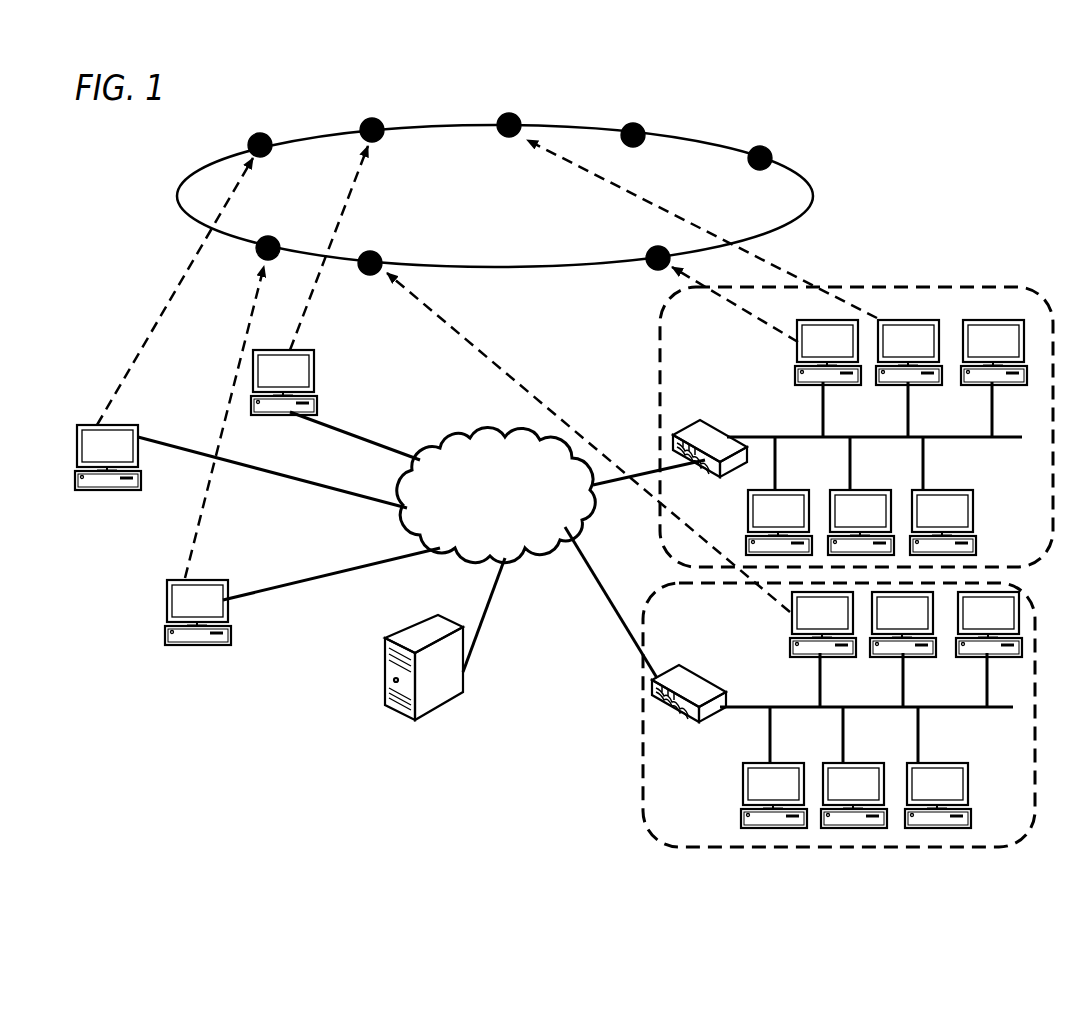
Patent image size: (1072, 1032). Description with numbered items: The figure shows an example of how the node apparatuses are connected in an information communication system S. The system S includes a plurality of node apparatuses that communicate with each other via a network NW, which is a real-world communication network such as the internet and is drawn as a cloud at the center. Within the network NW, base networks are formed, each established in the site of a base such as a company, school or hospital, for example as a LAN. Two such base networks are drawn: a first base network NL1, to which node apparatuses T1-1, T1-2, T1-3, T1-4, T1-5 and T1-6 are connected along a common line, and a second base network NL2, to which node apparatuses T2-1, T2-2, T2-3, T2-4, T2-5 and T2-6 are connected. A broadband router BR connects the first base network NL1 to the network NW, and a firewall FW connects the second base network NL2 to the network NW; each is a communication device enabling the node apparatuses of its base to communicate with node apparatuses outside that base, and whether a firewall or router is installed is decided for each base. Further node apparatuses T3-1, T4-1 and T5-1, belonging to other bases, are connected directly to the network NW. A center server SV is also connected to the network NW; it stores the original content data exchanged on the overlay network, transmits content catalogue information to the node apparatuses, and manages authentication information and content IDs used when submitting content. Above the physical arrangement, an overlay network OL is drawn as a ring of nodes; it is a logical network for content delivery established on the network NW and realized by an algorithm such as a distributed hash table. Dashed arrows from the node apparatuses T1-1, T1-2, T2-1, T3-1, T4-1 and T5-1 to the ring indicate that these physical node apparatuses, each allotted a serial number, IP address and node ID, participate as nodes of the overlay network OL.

The information communication system S is at (203, 746).
The overlay network OL is at (697, 132).
The network NW is at (435, 440).
The center server SV is at (432, 638).
The broadband router BR is at (700, 428).
The firewall FW is at (700, 680).
The base network NL1 is at (1004, 447).
The base network NL2 is at (981, 716).
The node apparatus T1-1 is at (650, 248).
The node apparatus T1-2 is at (514, 112).
The node apparatus T1-3 is at (985, 384).
The node apparatus T1-4 is at (770, 490).
The node apparatus T1-5 is at (852, 490).
The node apparatus T1-6 is at (938, 490).
The node apparatus T2-1 is at (378, 253).
The node apparatus T2-2 is at (882, 656).
The node apparatus T2-3 is at (970, 656).
The node apparatus T2-4 is at (745, 782).
The node apparatus T2-5 is at (856, 762).
The node apparatus T2-6 is at (936, 762).
The node apparatus T3-1 is at (276, 240).
The node apparatus T4-1 is at (266, 134).
The node apparatus T5-1 is at (372, 118).